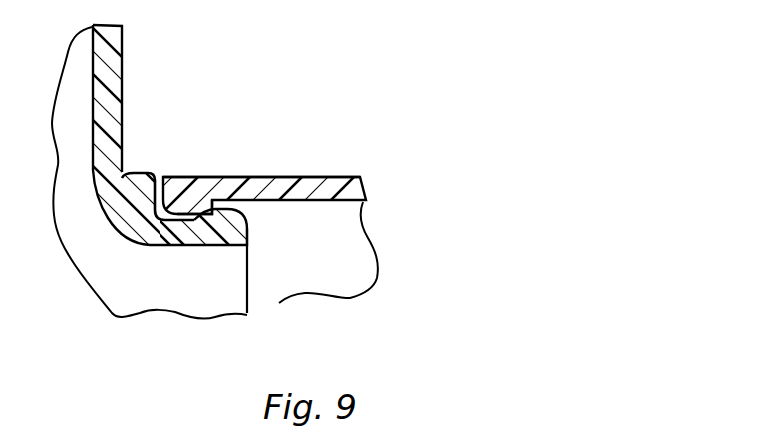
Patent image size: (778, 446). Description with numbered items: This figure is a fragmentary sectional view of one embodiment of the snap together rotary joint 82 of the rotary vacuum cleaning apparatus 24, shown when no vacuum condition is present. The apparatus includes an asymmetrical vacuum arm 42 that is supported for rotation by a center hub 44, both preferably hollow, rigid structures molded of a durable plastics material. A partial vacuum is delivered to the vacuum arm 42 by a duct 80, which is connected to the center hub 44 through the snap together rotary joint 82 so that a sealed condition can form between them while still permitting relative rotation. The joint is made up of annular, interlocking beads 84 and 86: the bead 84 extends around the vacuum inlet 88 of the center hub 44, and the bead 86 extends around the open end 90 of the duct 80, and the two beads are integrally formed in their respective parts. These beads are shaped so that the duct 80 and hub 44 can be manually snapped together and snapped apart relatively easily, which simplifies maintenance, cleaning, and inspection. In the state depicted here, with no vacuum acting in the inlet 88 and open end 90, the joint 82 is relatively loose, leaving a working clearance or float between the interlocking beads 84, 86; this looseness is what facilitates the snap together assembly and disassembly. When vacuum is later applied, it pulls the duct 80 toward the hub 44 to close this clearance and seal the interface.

The rotary vacuum cleaning apparatus 24 is at (373, 116).
The vacuum arm 42 is at (122, 82).
The center hub 44 is at (132, 175).
The duct 80 is at (354, 176).
The snap together rotary joint 82 is at (197, 176).
The annular interlocking bead 84 is at (160, 243).
The annular interlocking bead 86 is at (244, 196).
The vacuum inlet 88 is at (228, 287).
The open end 90 is at (302, 243).